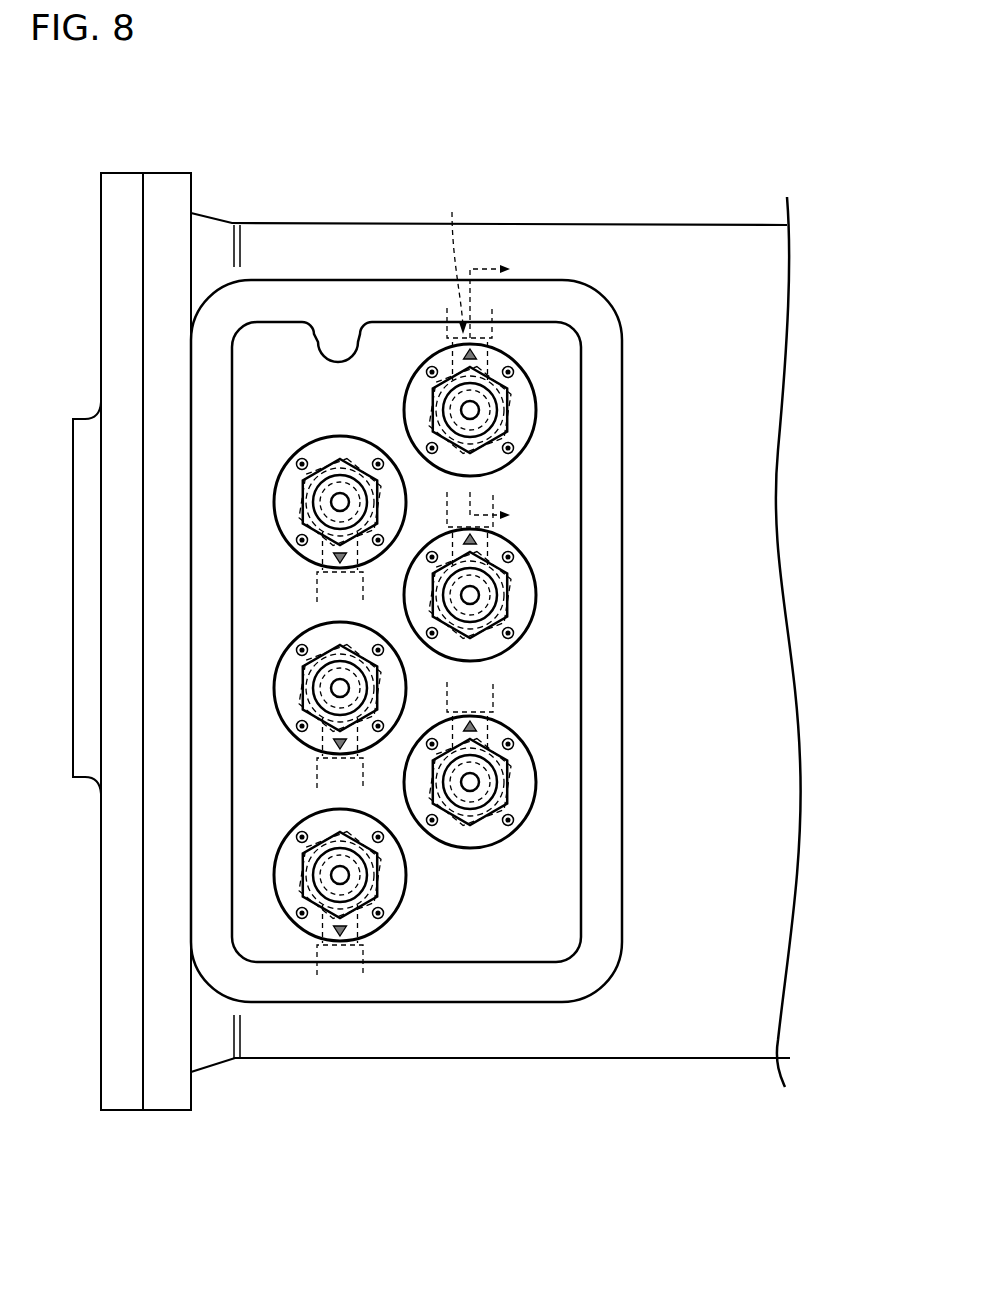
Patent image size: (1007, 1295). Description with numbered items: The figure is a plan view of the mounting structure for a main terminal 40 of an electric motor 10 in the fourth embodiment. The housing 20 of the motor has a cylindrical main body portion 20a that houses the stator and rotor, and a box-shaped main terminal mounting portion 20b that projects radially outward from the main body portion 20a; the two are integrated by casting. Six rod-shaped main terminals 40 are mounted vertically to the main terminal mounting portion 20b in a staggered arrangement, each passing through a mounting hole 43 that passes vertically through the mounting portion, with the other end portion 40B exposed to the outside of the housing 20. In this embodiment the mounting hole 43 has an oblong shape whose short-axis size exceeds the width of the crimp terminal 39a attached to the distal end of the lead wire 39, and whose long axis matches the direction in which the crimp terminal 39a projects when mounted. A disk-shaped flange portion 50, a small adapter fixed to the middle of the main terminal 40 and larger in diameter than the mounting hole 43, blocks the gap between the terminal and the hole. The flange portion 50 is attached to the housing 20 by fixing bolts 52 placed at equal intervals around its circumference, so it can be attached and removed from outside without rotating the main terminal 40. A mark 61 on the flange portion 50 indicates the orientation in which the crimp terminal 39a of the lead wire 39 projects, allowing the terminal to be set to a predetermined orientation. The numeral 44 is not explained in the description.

The electric motor 10 is at (593, 214).
The housing 20 is at (490, 730).
The main body portion 20a is at (523, 1134).
The main terminal mounting portion 20b is at (532, 1003).
The lead wire 39 is at (509, 301).
The crimp terminal 39a is at (517, 334).
The main terminal 40 is at (437, 581).
The other end portion 40B is at (396, 410).
The mounting hole 43 is at (521, 410).
The seal ring 44 is at (506, 422).
The flange portion 50 is at (406, 391).
The fixing bolt 52 is at (500, 384).
The mark 61 is at (440, 322).